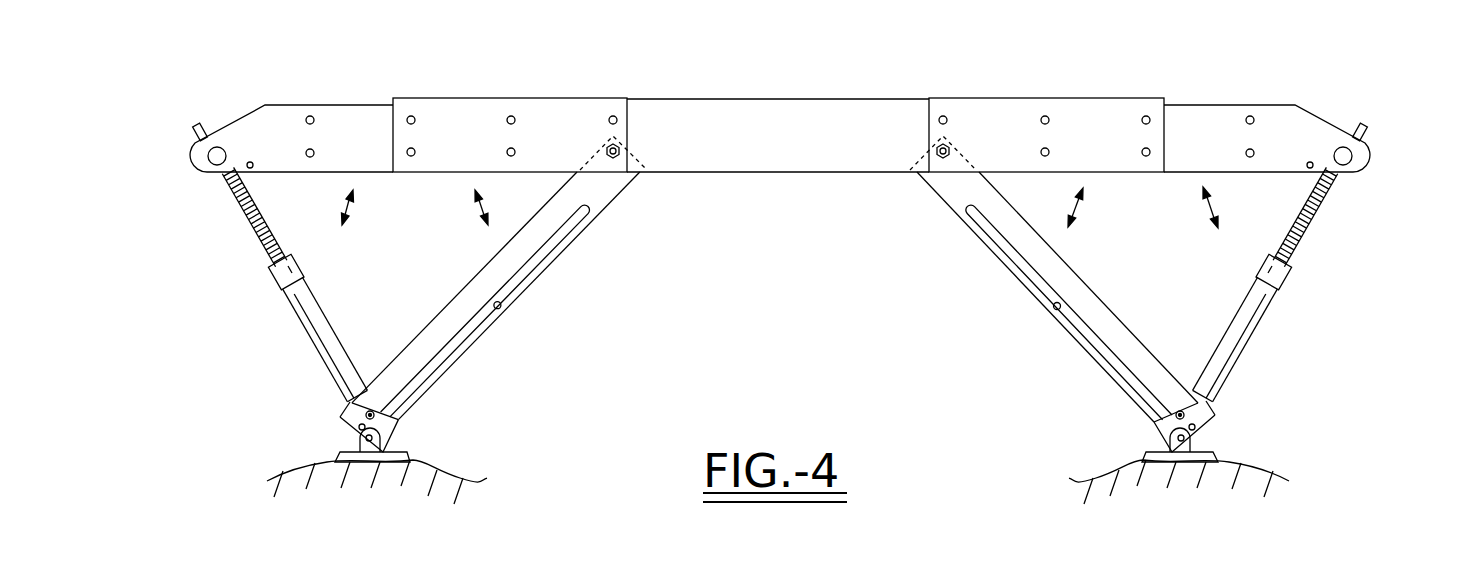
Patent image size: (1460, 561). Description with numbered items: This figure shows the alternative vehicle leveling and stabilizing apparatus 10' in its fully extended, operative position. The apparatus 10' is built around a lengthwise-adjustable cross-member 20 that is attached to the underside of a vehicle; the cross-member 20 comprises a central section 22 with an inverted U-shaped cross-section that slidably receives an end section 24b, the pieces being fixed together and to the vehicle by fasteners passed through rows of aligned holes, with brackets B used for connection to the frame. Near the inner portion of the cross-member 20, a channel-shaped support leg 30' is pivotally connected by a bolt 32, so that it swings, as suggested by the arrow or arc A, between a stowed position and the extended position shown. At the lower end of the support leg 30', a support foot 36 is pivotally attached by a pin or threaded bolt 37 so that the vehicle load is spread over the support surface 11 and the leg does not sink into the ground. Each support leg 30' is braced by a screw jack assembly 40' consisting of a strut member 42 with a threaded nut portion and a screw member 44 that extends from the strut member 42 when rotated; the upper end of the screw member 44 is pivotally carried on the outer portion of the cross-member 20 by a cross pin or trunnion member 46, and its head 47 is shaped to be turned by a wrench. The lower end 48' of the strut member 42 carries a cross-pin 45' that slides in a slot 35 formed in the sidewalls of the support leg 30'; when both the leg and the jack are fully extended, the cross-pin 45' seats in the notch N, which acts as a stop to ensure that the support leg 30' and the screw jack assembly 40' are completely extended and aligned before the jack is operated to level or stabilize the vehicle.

The vehicle leveling and stabilizing apparatus 10' is at (775, 265).
The cross-member 20 is at (732, 88).
The central section 22 is at (840, 103).
The end section 24b is at (1297, 105).
The support leg 30' is at (775, 303).
The bolt 32 is at (613, 160).
The slot 35 is at (501, 307).
The support foot 36 is at (352, 447).
The pin or threaded bolt 37 is at (369, 442).
The screw jack assembly 40' is at (784, 284).
The strut member 42 is at (327, 362).
The screw member 44 is at (253, 228).
The cross-pin 45' is at (775, 417).
The cross pin or trunnion member 46 is at (211, 157).
The head 47 is at (196, 125).
The lower end 48' is at (774, 417).
The support surface 11 is at (440, 470).
The notch N is at (345, 415).
The arrow or arc A is at (479, 212).
The brackets B is at (351, 211).